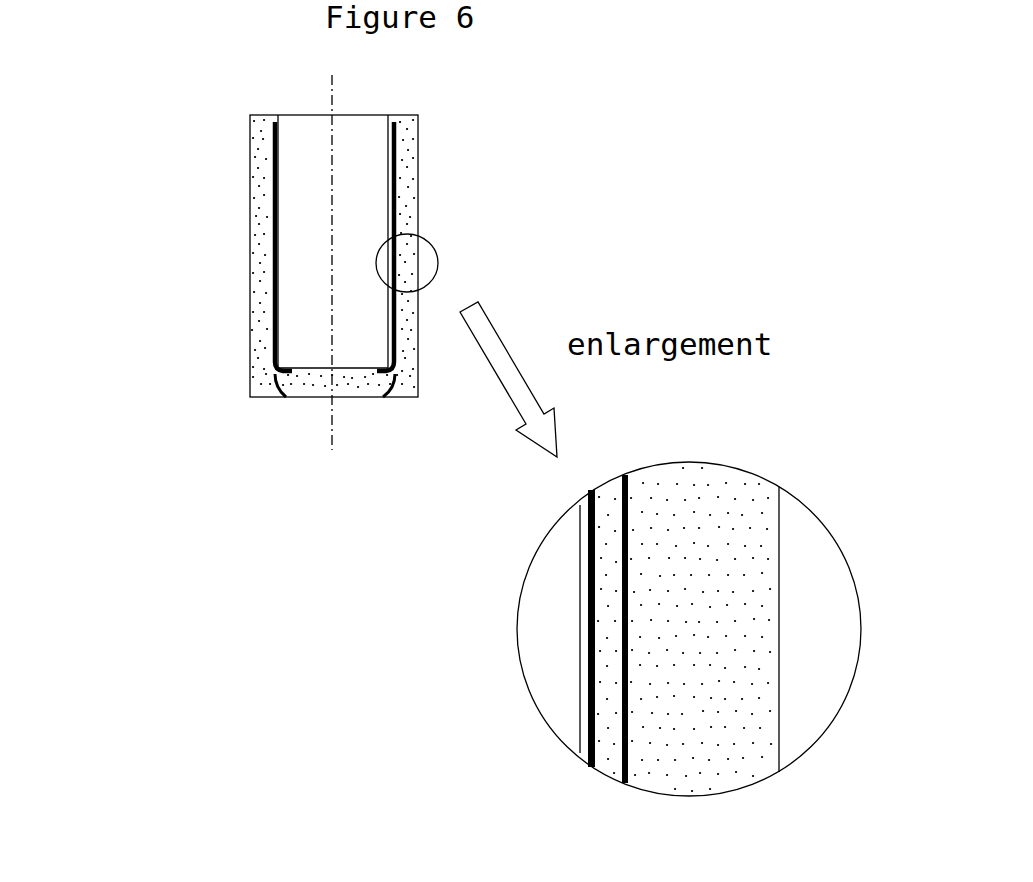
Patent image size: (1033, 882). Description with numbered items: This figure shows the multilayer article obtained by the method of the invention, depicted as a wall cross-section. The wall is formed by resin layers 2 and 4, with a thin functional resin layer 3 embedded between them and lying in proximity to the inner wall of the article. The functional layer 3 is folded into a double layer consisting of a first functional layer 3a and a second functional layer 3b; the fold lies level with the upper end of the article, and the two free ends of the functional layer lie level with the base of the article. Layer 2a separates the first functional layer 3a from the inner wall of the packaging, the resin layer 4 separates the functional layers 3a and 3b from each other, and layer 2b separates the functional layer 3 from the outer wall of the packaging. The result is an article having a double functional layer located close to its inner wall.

The resin layer 2 is at (262, 331).
The layer 2a is at (581, 524).
The layer 2b is at (708, 703).
The functional resin layer 3 is at (274, 271).
The first functional layer 3a is at (596, 590).
The second functional layer 3b is at (623, 727).
The resin layer 4 is at (322, 392).